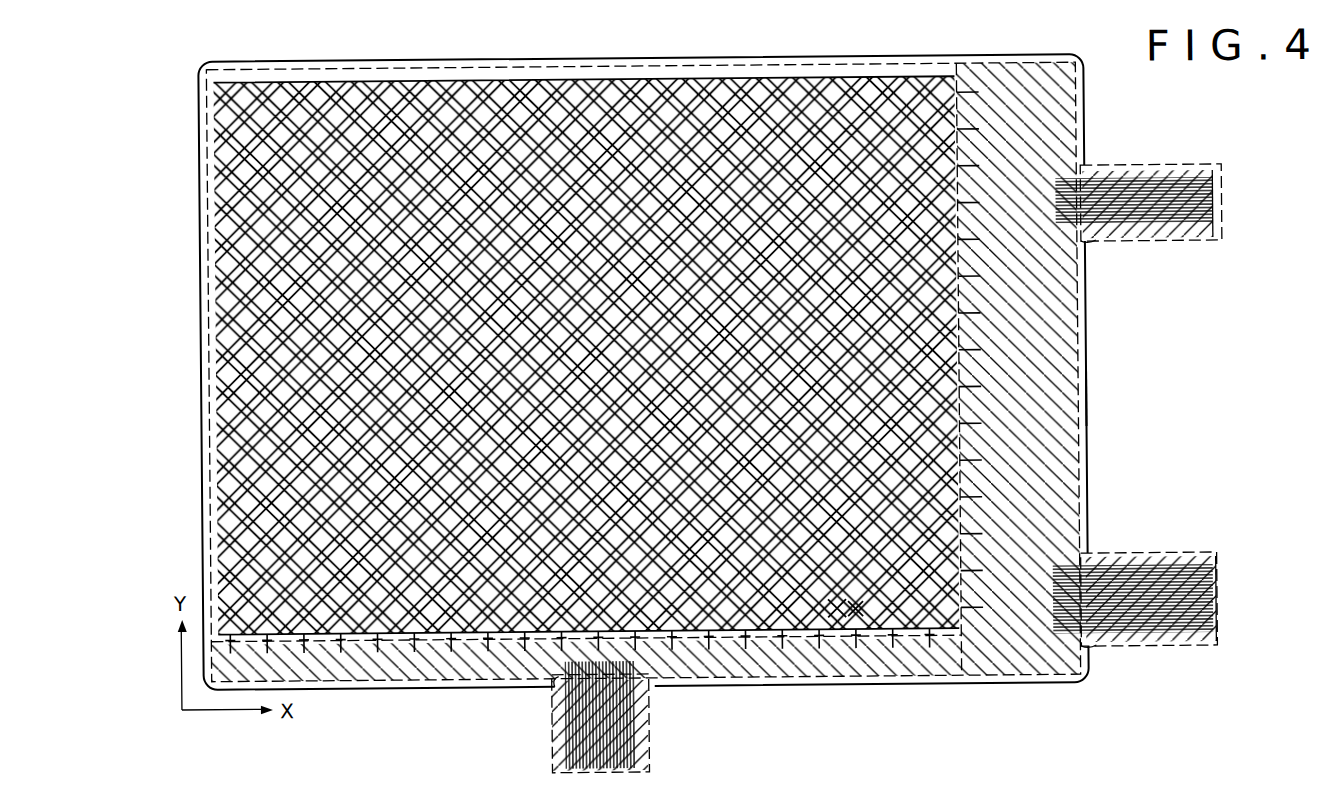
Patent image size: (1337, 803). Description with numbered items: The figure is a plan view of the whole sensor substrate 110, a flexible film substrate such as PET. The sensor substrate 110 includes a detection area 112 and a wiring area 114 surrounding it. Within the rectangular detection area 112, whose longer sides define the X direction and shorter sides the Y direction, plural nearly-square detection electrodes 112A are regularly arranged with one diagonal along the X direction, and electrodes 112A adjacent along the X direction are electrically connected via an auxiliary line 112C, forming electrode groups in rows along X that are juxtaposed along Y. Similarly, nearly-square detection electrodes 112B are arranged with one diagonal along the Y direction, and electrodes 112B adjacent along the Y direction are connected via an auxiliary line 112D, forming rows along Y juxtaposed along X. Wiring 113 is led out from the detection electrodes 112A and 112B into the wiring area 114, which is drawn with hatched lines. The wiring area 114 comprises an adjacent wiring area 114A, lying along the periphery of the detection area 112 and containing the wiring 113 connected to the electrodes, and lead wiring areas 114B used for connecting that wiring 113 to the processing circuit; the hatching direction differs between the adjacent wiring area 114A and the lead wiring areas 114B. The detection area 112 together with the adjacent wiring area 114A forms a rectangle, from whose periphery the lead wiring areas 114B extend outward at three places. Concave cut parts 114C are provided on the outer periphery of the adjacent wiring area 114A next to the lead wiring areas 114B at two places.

The sensor substrate 110 is at (1071, 66).
The detection area 112 is at (883, 74).
The detection electrode 112A is at (837, 616).
The detection electrode 112B is at (852, 602).
The auxiliary line 112C is at (446, 618).
The auxiliary line 112D is at (337, 615).
The wiring 113 is at (963, 580).
The wiring area 114 is at (1088, 399).
The adjacent wiring area 114A is at (1161, 395).
The lead wiring area 114B is at (887, 443).
The cut part 114C is at (550, 682).